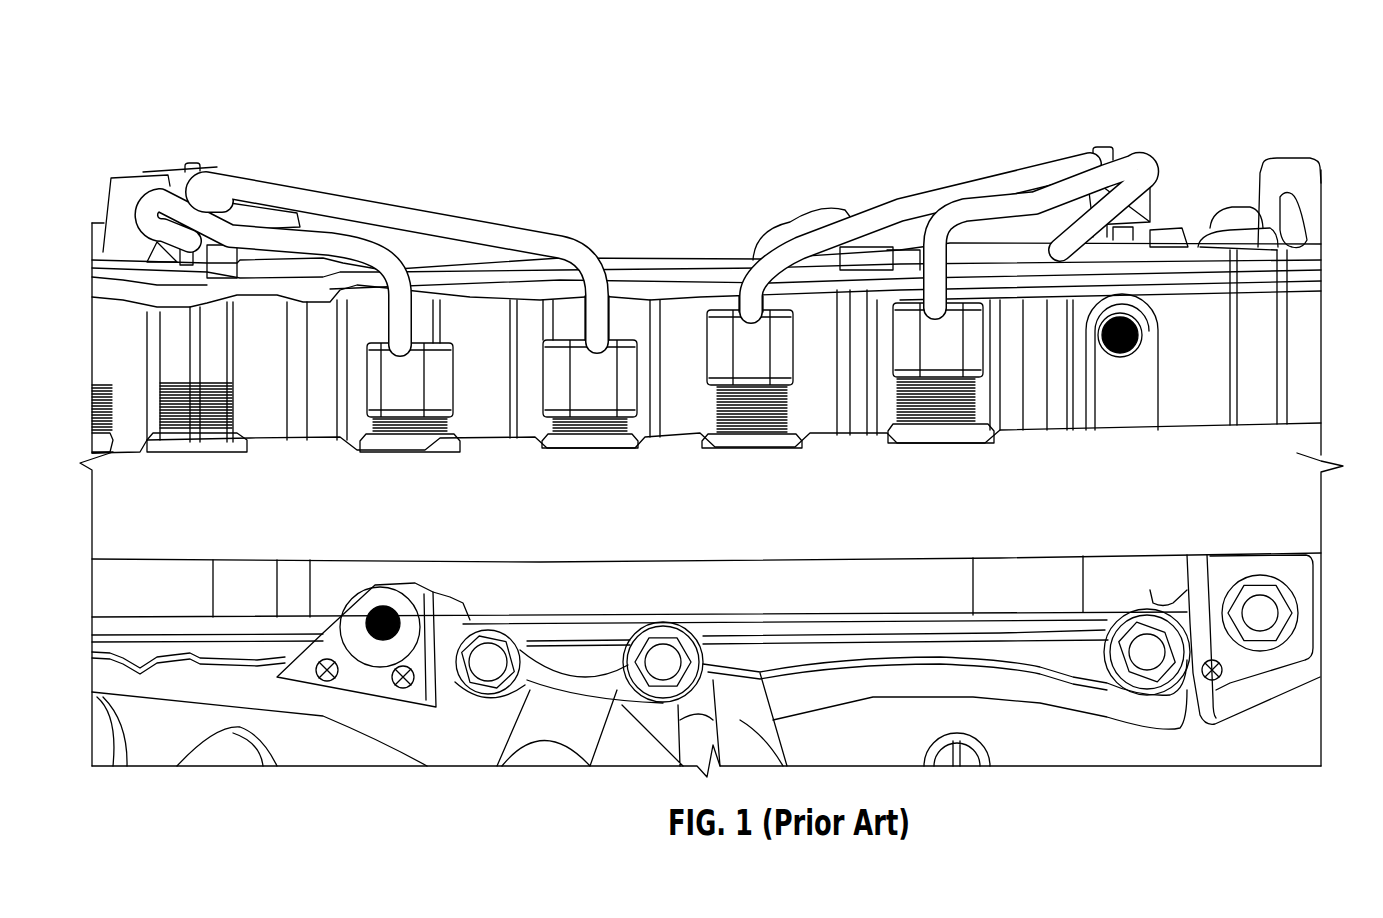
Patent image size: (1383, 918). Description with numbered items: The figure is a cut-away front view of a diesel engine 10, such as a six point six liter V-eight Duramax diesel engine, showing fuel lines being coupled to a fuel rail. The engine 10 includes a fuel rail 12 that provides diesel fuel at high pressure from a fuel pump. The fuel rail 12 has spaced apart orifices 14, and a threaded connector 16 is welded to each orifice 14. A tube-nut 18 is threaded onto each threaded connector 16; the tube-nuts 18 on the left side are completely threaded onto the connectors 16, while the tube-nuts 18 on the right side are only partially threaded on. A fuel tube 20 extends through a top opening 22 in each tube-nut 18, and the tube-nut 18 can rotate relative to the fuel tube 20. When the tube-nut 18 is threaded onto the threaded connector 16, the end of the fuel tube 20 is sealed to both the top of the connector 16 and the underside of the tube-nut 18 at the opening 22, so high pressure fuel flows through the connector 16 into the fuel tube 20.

The diesel engine 10 is at (462, 58).
The fuel rail 12 is at (1303, 502).
The orifice 14 is at (587, 451).
The threaded connector 16 is at (477, 432).
The tube-nut 18 is at (447, 374).
The fuel tube 20 is at (410, 214).
The top opening 22 is at (609, 300).